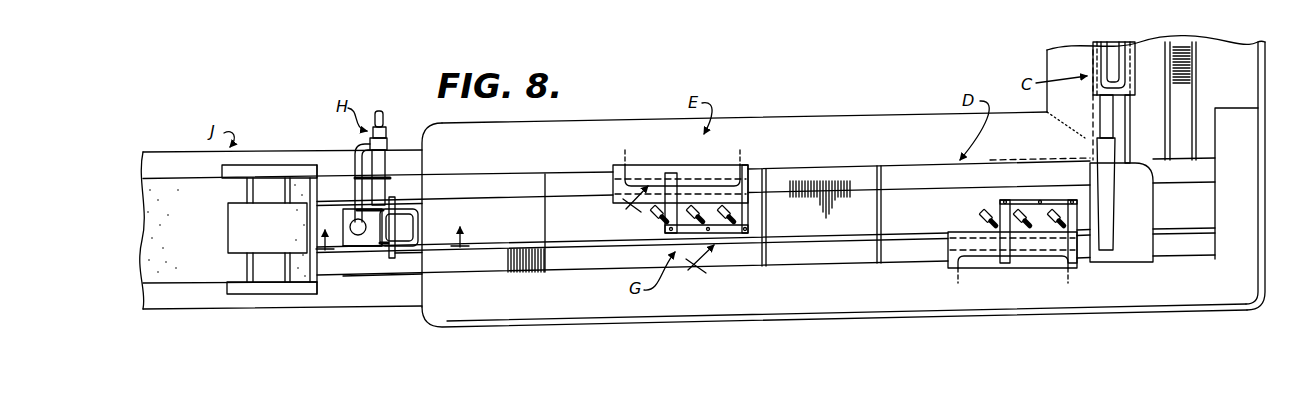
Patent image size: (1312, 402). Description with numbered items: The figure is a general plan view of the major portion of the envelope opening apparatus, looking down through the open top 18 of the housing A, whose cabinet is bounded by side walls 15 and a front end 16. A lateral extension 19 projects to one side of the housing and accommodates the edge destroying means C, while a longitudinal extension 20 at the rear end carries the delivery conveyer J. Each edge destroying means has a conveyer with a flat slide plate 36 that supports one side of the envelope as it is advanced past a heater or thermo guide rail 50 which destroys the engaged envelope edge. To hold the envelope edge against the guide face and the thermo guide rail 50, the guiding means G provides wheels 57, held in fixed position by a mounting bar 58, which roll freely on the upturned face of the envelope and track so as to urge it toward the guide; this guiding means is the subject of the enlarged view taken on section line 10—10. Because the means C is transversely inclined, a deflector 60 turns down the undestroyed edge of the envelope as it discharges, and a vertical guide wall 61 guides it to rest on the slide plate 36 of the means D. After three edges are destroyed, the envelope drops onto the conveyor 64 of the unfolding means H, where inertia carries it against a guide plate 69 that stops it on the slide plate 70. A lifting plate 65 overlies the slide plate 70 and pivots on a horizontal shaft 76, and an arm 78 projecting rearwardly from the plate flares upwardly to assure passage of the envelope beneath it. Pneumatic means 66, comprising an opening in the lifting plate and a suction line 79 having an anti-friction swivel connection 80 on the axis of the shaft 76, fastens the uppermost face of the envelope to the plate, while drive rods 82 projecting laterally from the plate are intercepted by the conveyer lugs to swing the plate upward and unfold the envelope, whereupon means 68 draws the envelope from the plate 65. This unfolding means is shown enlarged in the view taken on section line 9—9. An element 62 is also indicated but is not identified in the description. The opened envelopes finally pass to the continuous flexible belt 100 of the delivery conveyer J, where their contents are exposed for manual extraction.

The section line 9— 9 is at (392, 251).
The section line 10— 10 is at (658, 241).
The side walls 15 is at (1049, 310).
The front end 16 is at (1263, 196).
The top 18 is at (894, 122).
The lateral extension 19 is at (1052, 60).
The longitudinal extension 20 is at (186, 312).
The slide plate 36 is at (679, 199).
The thermo guide rail 50 is at (706, 165).
The wheels 57 is at (735, 216).
The mounting bar 58 is at (738, 233).
The deflector 60 is at (1113, 217).
The vertical guide wall 61 is at (1216, 212).
The pivot rod 62 is at (393, 257).
The conveyor 64 is at (379, 279).
The lifting plate 65 is at (356, 248).
The securing means 66 is at (347, 212).
The drawing means 68 is at (267, 228).
The guide plate 69 is at (423, 212).
The slide plate 70 is at (404, 270).
The shaft 76 is at (390, 163).
The arm 78 is at (419, 228).
The suction line 79 is at (356, 160).
The anti-friction swivel connection 80 is at (385, 122).
The drive rods 82 is at (389, 179).
The continuous flexible belt 100 is at (226, 230).